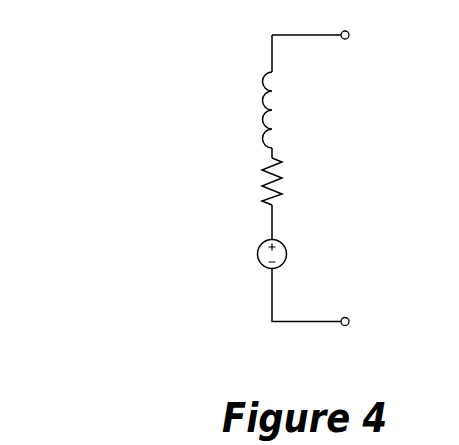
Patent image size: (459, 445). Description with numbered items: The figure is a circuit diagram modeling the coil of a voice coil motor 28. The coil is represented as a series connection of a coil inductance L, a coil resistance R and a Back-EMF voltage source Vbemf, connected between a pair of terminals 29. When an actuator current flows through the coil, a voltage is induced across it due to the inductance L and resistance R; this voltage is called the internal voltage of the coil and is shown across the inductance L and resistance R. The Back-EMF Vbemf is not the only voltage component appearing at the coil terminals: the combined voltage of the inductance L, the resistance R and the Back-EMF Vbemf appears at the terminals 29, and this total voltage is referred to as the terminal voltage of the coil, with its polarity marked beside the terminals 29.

The voice coil motor 28 is at (234, 178).
The terminals 29 is at (349, 37).
The coil inductance L is at (281, 110).
The coil resistance R is at (284, 181).
The Back-EMF voltage Vbemf is at (240, 254).